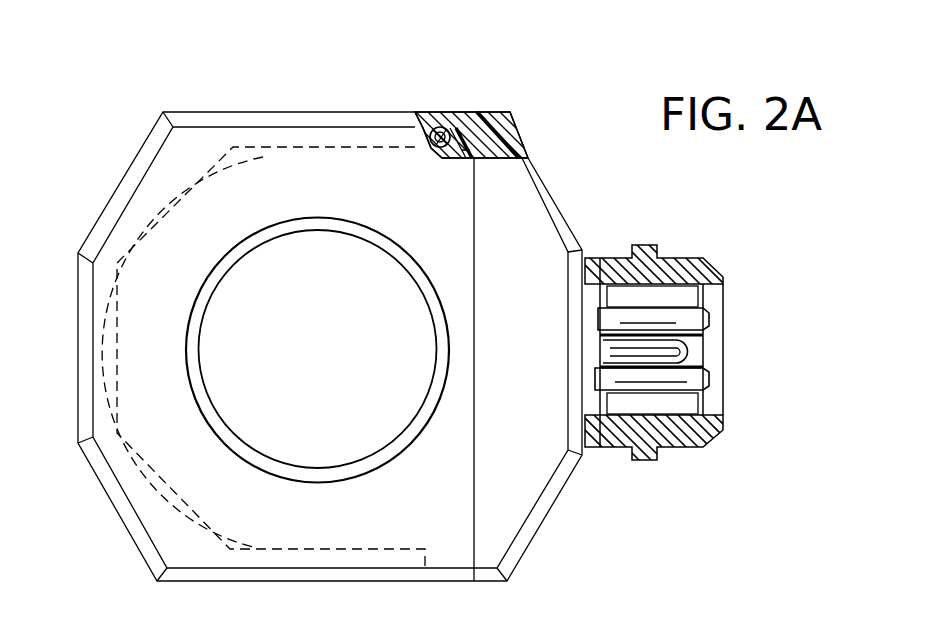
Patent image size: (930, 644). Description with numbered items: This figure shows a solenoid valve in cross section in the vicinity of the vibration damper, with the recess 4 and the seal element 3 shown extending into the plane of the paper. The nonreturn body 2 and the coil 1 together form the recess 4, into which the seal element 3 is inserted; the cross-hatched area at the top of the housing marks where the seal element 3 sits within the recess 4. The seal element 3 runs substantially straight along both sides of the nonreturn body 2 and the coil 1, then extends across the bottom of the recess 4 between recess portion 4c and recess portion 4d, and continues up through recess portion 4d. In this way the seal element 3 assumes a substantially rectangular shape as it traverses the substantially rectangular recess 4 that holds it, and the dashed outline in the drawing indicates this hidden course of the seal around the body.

The coil 1 is at (507, 133).
The nonreturn body 2 is at (423, 128).
The seal element 3 is at (449, 150).
The recess 4 is at (440, 138).
The recess portion 4c is at (438, 134).
The recess portion 4d is at (402, 560).